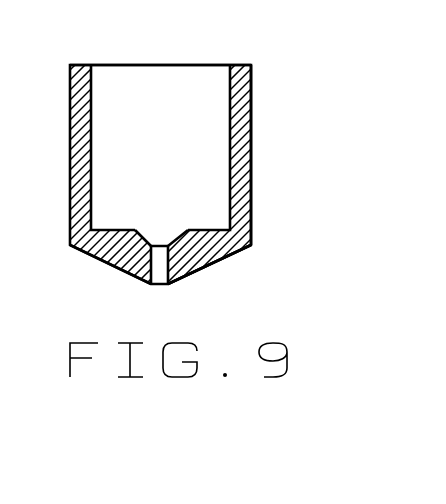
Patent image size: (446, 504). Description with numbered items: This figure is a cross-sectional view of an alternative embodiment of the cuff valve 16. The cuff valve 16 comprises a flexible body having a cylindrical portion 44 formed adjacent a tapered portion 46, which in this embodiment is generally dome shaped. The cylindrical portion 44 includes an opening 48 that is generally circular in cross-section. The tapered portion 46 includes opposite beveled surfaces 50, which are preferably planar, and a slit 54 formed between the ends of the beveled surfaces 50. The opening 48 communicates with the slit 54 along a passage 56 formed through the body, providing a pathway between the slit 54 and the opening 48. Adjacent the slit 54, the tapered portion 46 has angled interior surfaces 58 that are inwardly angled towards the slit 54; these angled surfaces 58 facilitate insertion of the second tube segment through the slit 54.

The cuff valve 16 is at (98, 263).
The cylindrical portion 44 is at (252, 117).
The tapered portion 46 is at (236, 264).
The opening 48 is at (153, 65).
The beveled surfaces 50 is at (135, 277).
The slit 54 is at (160, 277).
The passage 56 is at (178, 125).
The angled interior surfaces 58 is at (137, 232).